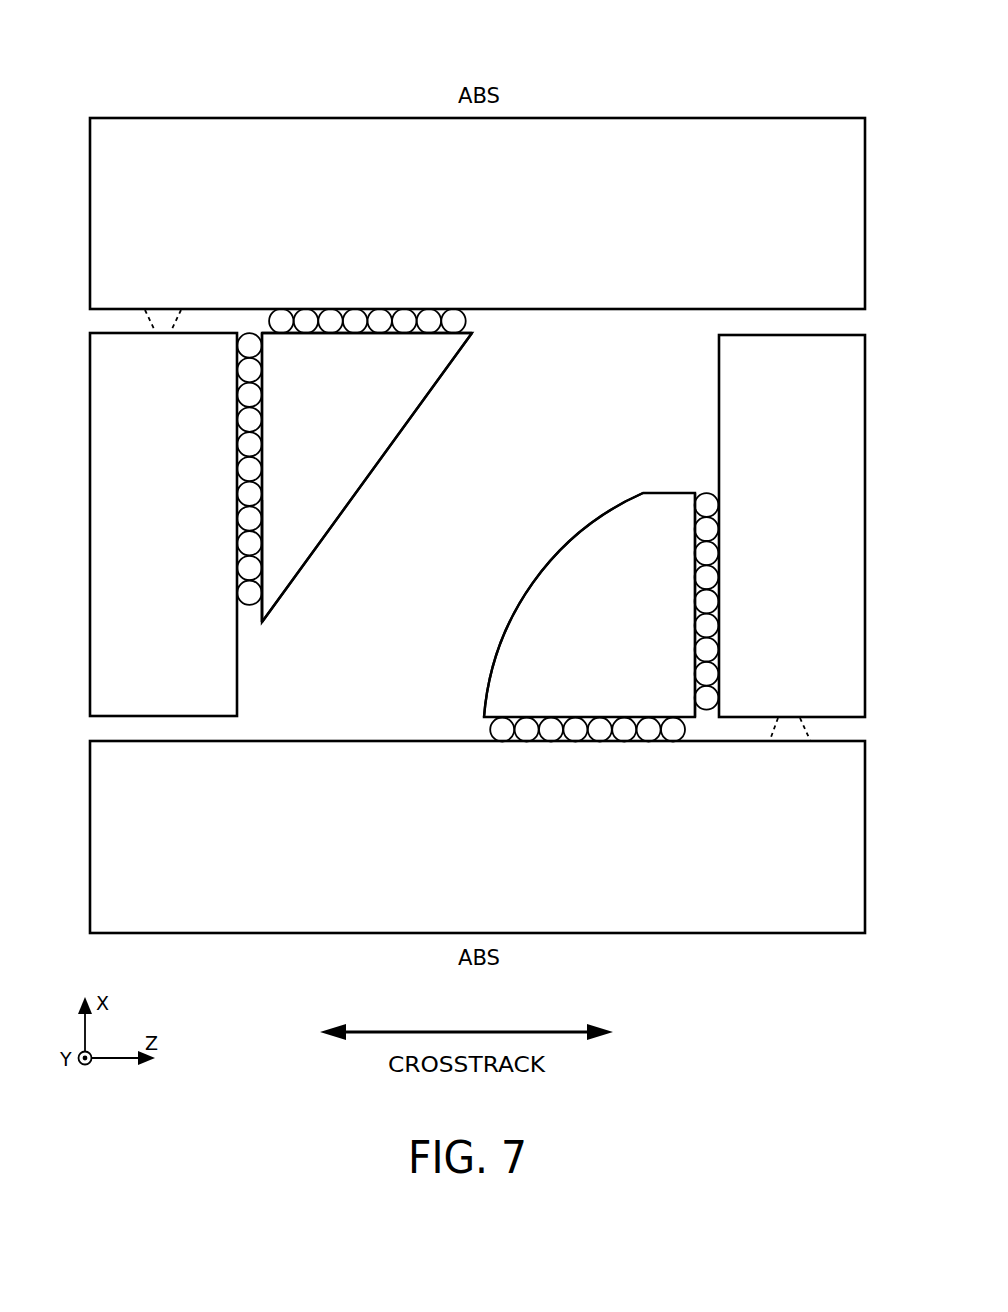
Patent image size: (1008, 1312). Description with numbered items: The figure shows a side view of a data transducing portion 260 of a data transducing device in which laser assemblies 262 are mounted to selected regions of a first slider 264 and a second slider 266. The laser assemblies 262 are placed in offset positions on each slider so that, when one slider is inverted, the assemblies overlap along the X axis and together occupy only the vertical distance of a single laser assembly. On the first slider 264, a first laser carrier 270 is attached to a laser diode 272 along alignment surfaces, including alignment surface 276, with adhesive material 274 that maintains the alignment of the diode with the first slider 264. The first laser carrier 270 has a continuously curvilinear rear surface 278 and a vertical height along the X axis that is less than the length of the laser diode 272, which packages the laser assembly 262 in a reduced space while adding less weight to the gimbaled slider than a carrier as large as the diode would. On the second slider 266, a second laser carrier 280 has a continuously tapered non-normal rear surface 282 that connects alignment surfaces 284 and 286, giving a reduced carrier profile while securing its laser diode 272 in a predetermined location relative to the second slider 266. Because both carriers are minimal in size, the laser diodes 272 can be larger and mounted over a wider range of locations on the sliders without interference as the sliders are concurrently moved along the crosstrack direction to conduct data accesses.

The data transducing portion 260 is at (156, 60).
The laser assembly 262 is at (497, 541).
The first slider 264 is at (477, 837).
The second slider 266 is at (477, 213).
The first laser carrier 270 is at (478, 525).
The laser diode 272 is at (477, 525).
The adhesive material 274 is at (478, 322).
The alignment surface 276 is at (683, 605).
The continuously curvilinear rear surface 278 is at (600, 517).
The second laser carrier 280 is at (285, 561).
The continuously tapered non-normal rear surface 282 is at (345, 510).
The alignment surface 284 is at (367, 346).
The alignment surface 286 is at (276, 477).